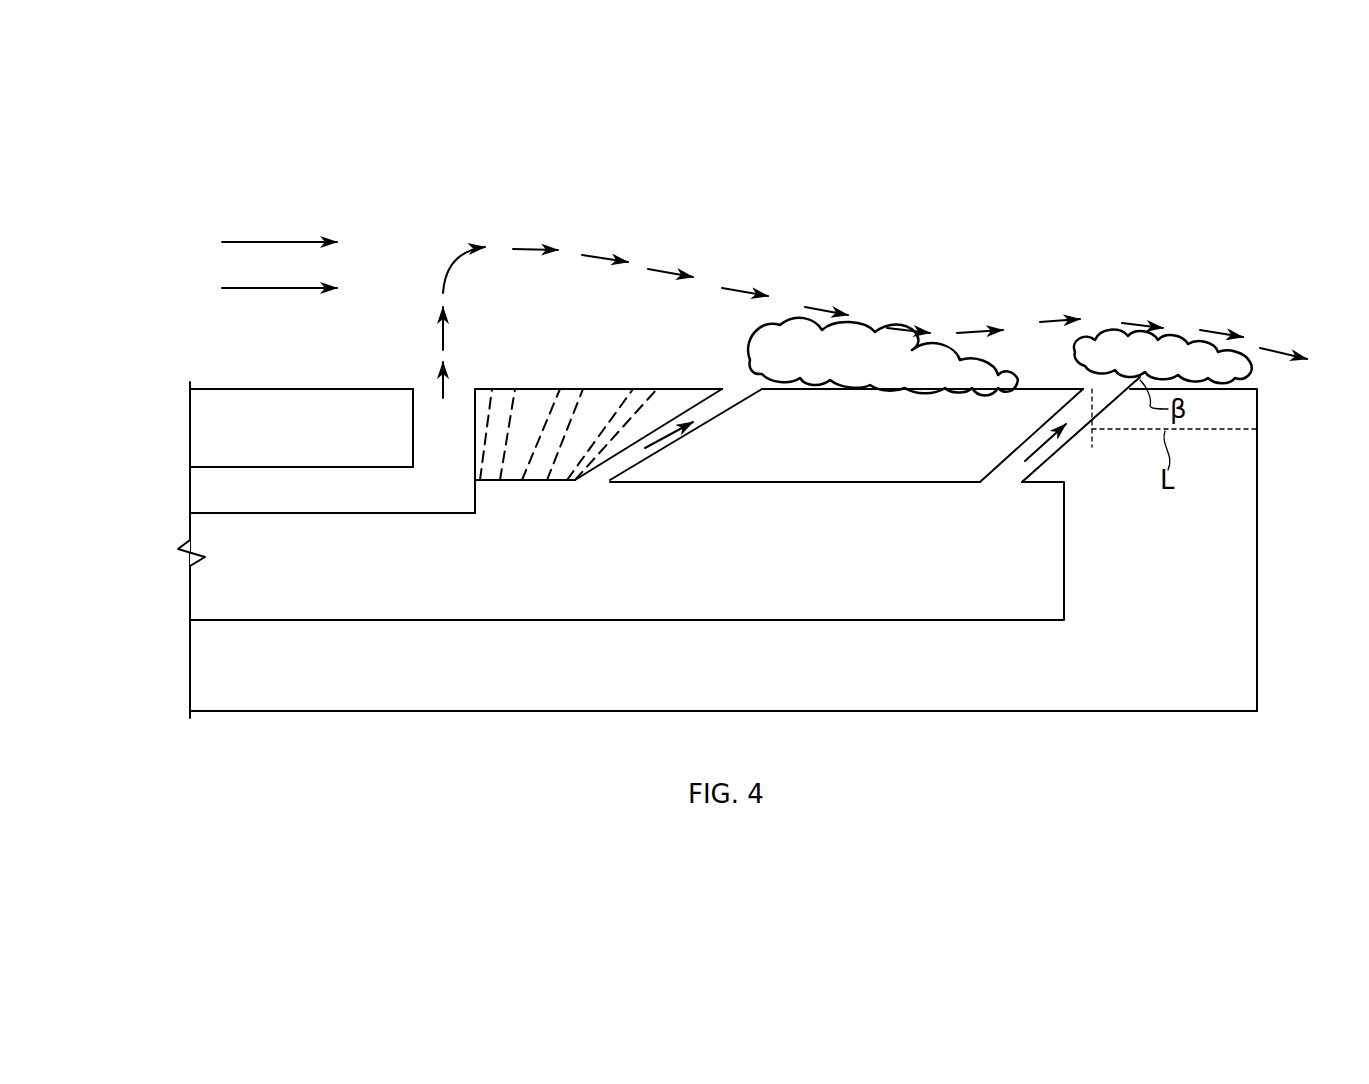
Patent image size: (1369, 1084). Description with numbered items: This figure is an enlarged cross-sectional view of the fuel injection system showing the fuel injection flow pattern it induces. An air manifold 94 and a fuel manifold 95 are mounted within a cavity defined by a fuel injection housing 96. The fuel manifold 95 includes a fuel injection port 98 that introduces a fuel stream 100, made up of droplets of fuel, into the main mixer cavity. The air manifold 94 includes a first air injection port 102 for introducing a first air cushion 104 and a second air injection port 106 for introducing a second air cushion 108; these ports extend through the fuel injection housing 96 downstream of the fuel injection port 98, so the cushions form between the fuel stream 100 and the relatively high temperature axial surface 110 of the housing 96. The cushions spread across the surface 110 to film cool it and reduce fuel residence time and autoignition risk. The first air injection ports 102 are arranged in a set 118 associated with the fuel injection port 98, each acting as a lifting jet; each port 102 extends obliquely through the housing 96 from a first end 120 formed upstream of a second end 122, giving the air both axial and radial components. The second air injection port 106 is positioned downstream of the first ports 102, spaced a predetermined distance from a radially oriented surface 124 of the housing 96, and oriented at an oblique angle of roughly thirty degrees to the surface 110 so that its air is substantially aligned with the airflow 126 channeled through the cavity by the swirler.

The air manifold 94 is at (688, 567).
The fuel manifold 95 is at (350, 505).
The fuel injection housing 96 is at (298, 437).
The fuel injection port 98 is at (413, 422).
The fuel stream 100 is at (655, 242).
The first air injection port 102 is at (722, 432).
The first air cushion 104 is at (857, 328).
The second air injection port 106 is at (1000, 460).
The second air cushion 108 is at (1182, 340).
The axial surface 110 is at (303, 389).
The set of air injection ports 118 is at (610, 524).
The first end 120 is at (645, 467).
The second end 122 is at (765, 400).
The radially oriented surface 124 is at (1257, 505).
The airflow 126 is at (176, 192).